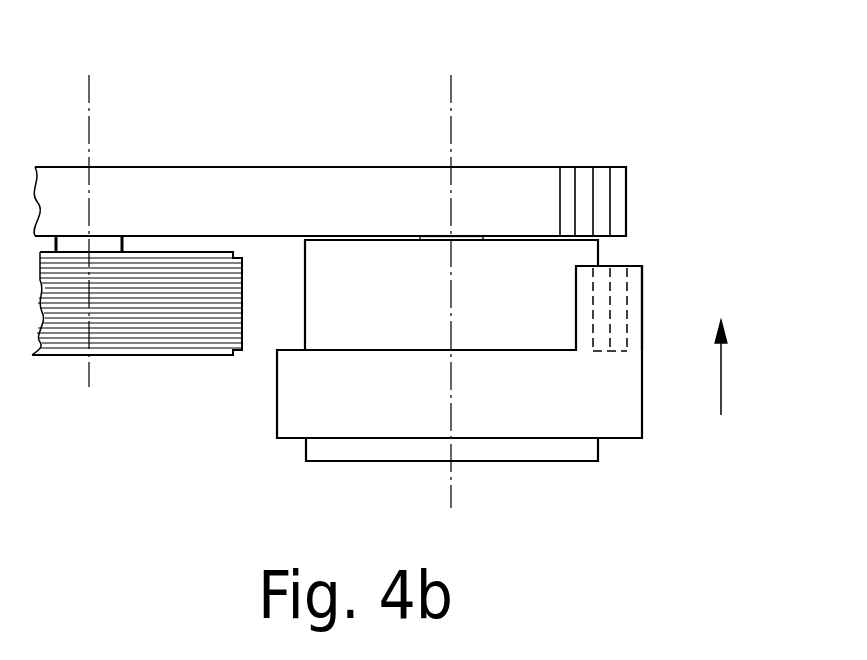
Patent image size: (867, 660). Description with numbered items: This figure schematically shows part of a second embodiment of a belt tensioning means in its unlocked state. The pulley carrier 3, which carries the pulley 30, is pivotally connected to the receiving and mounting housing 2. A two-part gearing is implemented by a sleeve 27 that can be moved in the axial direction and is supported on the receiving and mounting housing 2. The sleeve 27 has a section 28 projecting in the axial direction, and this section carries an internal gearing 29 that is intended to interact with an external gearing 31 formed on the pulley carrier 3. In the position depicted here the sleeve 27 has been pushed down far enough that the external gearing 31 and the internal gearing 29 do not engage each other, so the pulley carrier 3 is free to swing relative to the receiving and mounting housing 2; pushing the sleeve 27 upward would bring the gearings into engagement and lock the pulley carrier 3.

The receiving and mounting housing 2 is at (528, 447).
The pulley carrier 3 is at (160, 190).
The sleeve 27 is at (595, 415).
The section 28 is at (642, 318).
The internal gearing 29 is at (609, 288).
The pulley 30 is at (66, 340).
The external gearing 31 is at (593, 174).